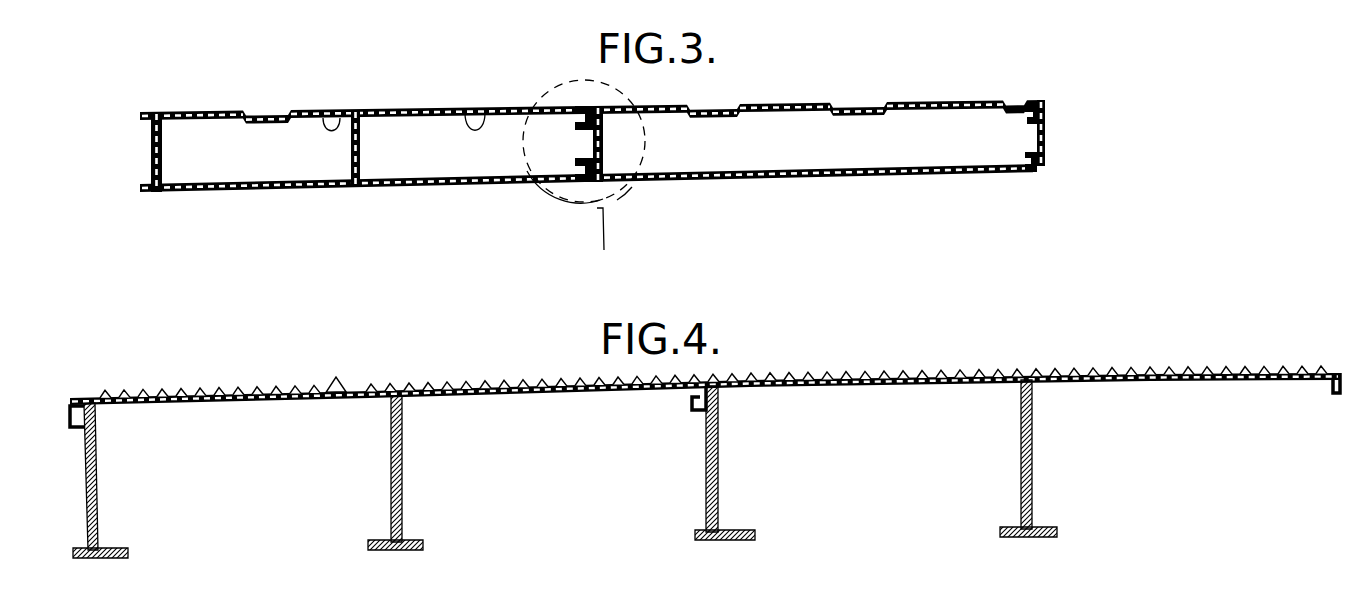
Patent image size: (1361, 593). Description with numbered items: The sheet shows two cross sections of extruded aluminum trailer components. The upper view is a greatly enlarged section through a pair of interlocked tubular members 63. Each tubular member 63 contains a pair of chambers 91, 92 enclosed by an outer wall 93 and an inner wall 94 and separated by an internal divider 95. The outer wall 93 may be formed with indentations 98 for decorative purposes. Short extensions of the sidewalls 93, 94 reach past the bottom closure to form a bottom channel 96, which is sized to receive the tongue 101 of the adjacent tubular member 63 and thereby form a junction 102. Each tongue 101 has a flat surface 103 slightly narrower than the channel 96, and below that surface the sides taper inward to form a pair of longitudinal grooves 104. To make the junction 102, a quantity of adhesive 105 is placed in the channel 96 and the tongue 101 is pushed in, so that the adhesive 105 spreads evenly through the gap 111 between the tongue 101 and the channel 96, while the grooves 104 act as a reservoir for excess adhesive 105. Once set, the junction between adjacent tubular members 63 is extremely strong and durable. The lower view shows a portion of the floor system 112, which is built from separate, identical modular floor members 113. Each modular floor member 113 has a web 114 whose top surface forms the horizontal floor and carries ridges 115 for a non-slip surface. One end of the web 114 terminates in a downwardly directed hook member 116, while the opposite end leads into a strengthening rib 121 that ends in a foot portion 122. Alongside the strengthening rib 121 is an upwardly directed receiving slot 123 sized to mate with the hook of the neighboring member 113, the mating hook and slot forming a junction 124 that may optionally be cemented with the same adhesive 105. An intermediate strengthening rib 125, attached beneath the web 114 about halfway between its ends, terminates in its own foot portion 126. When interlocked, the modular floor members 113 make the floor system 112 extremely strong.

In FIG. 3, the tubular member 63 is at (366, 214).
In FIG. 3, the chamber 91 is at (322, 118).
In FIG. 3, the chamber 92 is at (465, 113).
In FIG. 3, the outer wall 93 is at (229, 112).
In FIG. 3, the inner wall 94 is at (238, 190).
In FIG. 3, the internal divider 95 is at (362, 151).
In FIG. 3, the bottom channel 96 is at (151, 152).
In FIG. 3, the indentations 98 is at (272, 111).
In FIG. 3, the tongue 101 is at (1055, 118).
In FIG. 3, the junction 102 is at (562, 194).
In FIG. 3, the flat surface 103 is at (1047, 139).
In FIG. 3, the grooves 104 is at (1032, 172).
In FIG. 3, the adhesive 105 is at (584, 108).
In FIG. 3, the gap 111 is at (584, 176).
In FIG. 4, the floor system 112 is at (485, 358).
In FIG. 4, the modular floor member 113 is at (577, 494).
In FIG. 4, the web 114 is at (258, 390).
In FIG. 4, the ridges 115 is at (336, 378).
In FIG. 4, the hook member 116 is at (1345, 387).
In FIG. 4, the strengthening rib 121 is at (97, 494).
In FIG. 4, the foot portion 122 is at (127, 548).
In FIG. 4, the receiving slot 123 is at (75, 405).
In FIG. 4, the junction 124 is at (704, 371).
In FIG. 4, the intermediate strengthening rib 125 is at (392, 487).
In FIG. 4, the foot portion 126 is at (421, 539).